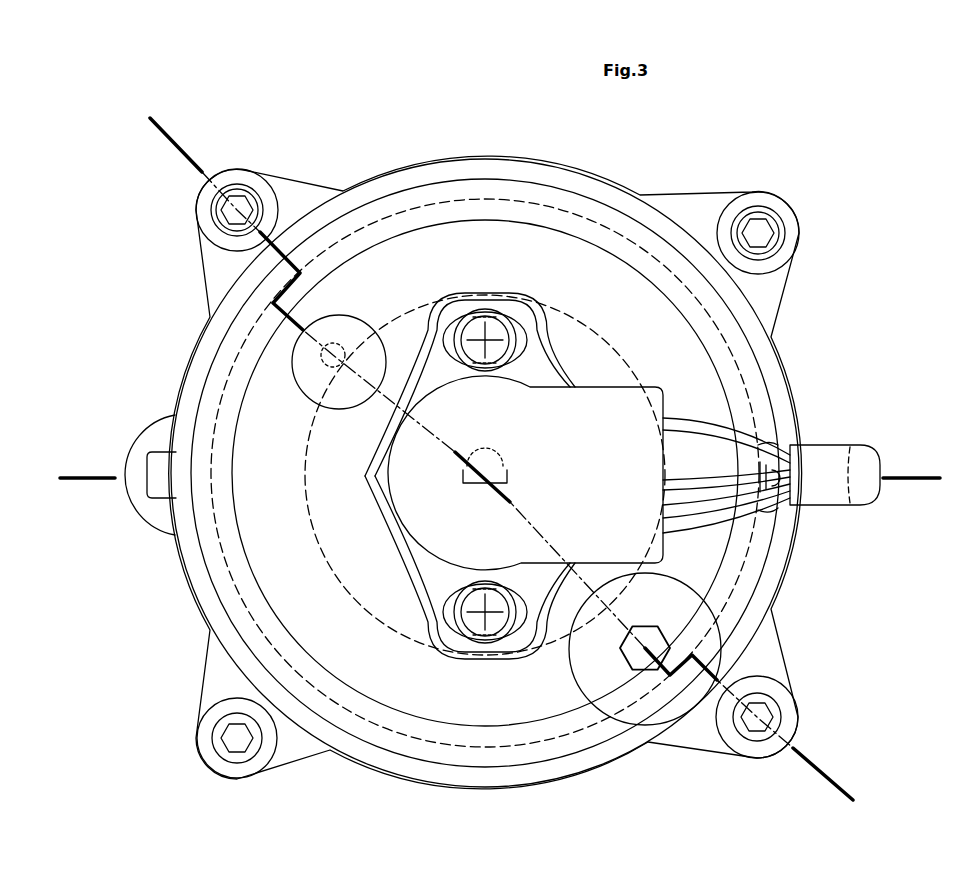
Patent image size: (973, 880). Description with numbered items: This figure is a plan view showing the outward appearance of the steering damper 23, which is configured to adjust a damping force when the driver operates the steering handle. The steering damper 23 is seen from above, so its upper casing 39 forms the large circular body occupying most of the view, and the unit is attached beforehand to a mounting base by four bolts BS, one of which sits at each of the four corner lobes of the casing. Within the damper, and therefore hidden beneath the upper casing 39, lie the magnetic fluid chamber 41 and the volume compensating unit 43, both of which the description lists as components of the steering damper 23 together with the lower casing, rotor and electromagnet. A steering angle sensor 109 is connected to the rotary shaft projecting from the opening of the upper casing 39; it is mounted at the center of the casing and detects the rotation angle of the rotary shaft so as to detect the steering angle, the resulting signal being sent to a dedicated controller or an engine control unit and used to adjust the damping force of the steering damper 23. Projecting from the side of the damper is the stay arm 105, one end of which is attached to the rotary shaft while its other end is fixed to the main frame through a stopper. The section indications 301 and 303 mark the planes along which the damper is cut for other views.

The steering damper 23 is at (806, 192).
The upper casing 39 is at (775, 377).
The magnetic fluid chamber 41 is at (366, 232).
The volume compensating unit 43 is at (625, 690).
The stay arm 105 is at (145, 436).
The steering angle sensor 109 is at (590, 423).
The bolts BS is at (225, 220).
The section line 301 is at (173, 148).
The section line 303 is at (68, 482).